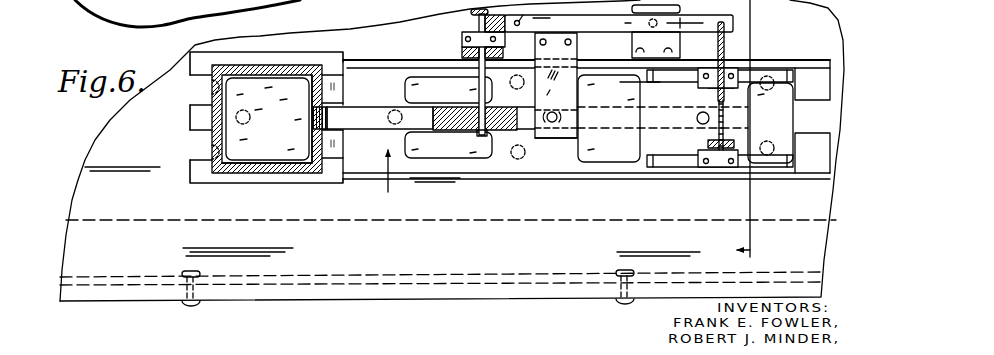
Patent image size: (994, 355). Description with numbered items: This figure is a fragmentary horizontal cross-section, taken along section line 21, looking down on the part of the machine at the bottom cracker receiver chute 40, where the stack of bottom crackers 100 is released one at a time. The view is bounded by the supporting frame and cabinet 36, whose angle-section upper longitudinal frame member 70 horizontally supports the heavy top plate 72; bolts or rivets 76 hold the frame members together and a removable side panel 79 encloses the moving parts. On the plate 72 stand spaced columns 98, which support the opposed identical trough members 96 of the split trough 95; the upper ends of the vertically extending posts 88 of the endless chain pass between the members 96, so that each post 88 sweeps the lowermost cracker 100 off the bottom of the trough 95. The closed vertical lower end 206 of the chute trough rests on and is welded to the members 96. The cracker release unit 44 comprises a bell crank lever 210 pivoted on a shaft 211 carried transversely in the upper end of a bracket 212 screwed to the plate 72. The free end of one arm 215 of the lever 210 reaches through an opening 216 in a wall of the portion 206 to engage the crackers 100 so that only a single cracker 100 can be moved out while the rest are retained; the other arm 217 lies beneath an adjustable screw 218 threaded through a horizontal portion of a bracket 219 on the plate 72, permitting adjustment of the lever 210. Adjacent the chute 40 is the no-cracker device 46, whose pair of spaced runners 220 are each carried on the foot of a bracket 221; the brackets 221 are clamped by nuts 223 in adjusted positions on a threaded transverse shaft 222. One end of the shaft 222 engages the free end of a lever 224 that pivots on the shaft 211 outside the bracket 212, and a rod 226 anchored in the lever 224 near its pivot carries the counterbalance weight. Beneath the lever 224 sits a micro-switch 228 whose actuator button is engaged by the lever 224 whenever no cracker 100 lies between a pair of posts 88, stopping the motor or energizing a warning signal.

The section line 21 is at (757, 133).
The supporting frame and cabinet 36 is at (128, 306).
The bottom cracker receiver chute 40 is at (230, 173).
The cracker release unit 44 is at (380, 178).
The no cracker device 46 is at (735, 52).
The upper longitudinal frame member 70 is at (387, 275).
The top plate 72 is at (390, 16).
The bolt or rivet 76 is at (190, 306).
The removable side panel 79 is at (478, 287).
The post 88 is at (233, 117).
The split trough 95 is at (183, 179).
The trough member 96 is at (812, 68).
The column 98 is at (203, 90).
The bottom cracker 100 is at (342, 100).
The vertical lower end of trough 206 is at (273, 66).
The bell crank lever 210 is at (377, 102).
The shaft 211 is at (478, 83).
The bracket 212 is at (461, 34).
The arm of bell crank lever 215 is at (367, 120).
The opening 216 is at (322, 168).
The other arm of bell crank 217 is at (507, 131).
The adjustable screw 218 is at (563, 139).
The bracket 219 is at (567, 90).
The runner 220 is at (667, 80).
The bracket 221 is at (717, 55).
The shaft 222 is at (725, 120).
The nut 223 is at (708, 93).
The lever 224 is at (592, 22).
The rod 226 is at (498, 36).
The micro-switch 228 is at (650, 33).